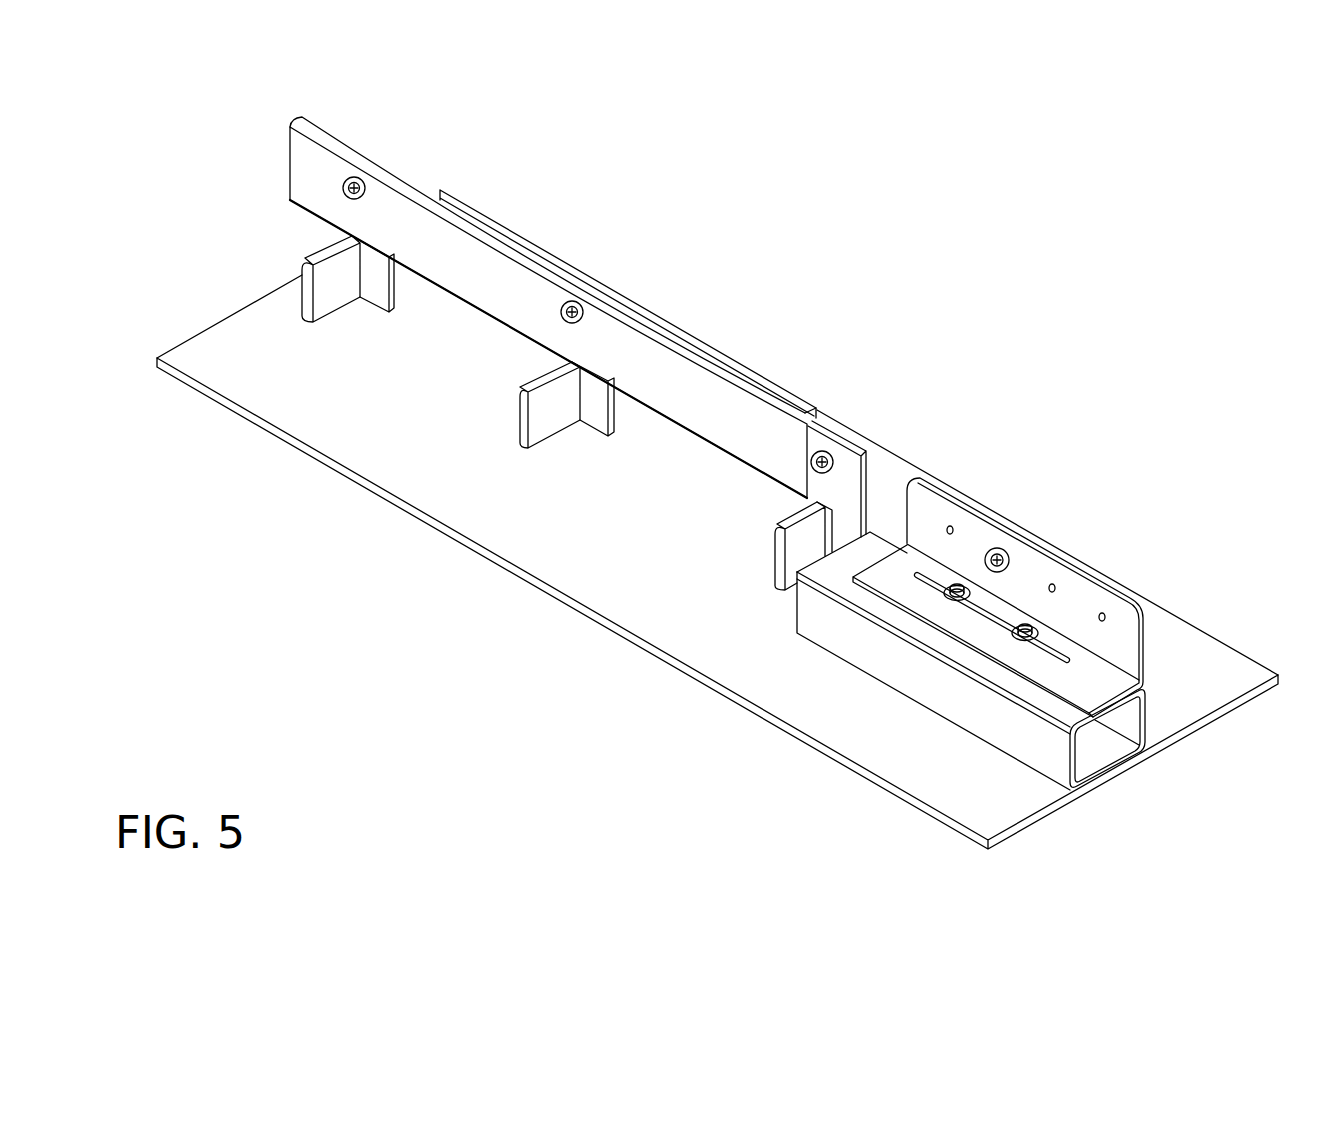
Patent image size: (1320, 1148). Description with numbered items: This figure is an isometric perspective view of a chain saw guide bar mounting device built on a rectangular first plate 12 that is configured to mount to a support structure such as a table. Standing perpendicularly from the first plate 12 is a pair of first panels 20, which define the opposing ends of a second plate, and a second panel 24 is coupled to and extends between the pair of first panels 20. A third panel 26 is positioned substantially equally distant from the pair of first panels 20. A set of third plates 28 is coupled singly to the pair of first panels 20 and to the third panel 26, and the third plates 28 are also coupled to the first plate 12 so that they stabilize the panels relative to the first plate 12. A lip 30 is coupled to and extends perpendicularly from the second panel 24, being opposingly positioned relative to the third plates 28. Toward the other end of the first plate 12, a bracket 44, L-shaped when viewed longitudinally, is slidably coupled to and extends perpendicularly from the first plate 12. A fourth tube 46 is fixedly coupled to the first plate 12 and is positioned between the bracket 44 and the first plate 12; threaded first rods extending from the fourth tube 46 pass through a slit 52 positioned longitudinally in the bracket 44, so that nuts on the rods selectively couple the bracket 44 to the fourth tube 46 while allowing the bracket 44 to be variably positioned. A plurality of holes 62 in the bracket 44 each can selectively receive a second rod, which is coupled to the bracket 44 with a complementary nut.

The first plate 12 is at (232, 385).
The first panels 20 is at (827, 493).
The second panel 24 is at (357, 225).
The third panel 26 is at (598, 420).
The third plates 28 is at (523, 418).
The lip 30 is at (812, 410).
The bracket 44 is at (1122, 597).
The fourth tube 46 is at (1143, 712).
The slit 52 is at (985, 614).
The holes 62 is at (1102, 617).